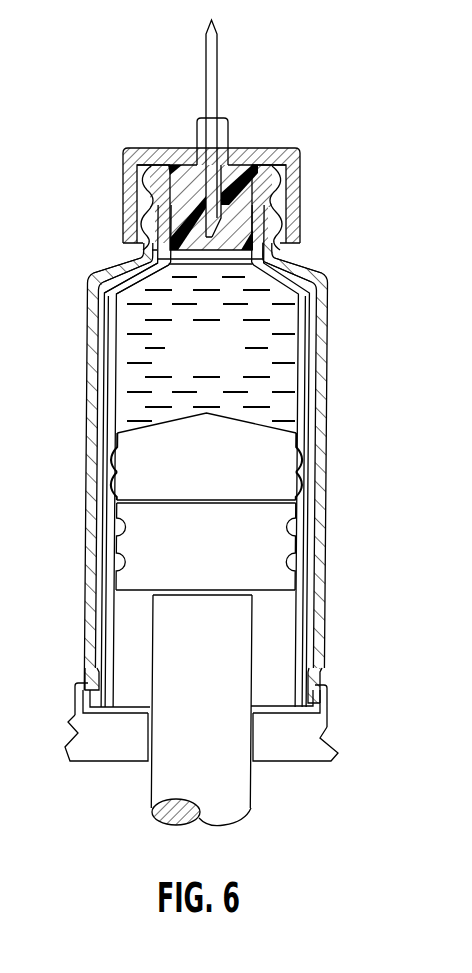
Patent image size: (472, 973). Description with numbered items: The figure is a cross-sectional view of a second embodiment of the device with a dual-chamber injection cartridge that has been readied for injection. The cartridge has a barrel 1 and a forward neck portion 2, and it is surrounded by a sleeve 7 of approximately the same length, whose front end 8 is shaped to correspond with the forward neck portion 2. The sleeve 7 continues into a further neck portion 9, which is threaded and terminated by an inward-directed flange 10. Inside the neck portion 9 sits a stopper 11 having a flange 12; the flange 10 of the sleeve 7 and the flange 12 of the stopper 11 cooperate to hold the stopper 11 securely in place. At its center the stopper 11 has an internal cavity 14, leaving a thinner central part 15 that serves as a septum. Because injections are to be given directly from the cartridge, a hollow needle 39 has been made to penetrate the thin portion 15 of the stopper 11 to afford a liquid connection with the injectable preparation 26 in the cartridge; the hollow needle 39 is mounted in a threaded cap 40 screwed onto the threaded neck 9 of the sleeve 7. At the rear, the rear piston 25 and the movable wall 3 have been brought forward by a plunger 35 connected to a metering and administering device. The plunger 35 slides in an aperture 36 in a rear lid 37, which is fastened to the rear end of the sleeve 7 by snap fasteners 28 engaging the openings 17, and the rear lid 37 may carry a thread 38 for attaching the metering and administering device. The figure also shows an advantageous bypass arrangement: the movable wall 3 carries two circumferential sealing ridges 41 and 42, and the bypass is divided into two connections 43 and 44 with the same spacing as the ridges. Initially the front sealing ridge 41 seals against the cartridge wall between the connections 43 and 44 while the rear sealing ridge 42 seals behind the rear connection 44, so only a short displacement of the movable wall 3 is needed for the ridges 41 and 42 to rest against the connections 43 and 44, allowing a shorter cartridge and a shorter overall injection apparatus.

The barrel 1 is at (115, 347).
The forward neck portion 2 is at (143, 258).
The movable wall 3 is at (211, 469).
The sleeve 7 is at (328, 350).
The front end 8 is at (303, 268).
The neck portion 9 is at (142, 193).
The inward-directed flange 10 is at (147, 148).
The stopper 11 is at (233, 213).
The flange 12 is at (262, 200).
The internal cavity 14 is at (200, 167).
The thinner central part 15 is at (193, 170).
The means for attaching actuating means 17 is at (86, 684).
The rear piston 25 is at (222, 562).
The injectable preparation 26 is at (229, 361).
The snap fasteners 28 is at (80, 679).
The plunger 35 is at (221, 707).
The aperture 36 is at (152, 766).
The rear lid 37 is at (108, 747).
The thread 38 is at (328, 735).
The hollow needle 39 is at (217, 86).
The threaded cap 40 is at (163, 148).
The front sealing ridge 41 is at (122, 441).
The rear sealing ridge 42 is at (120, 497).
The bypass connection 43 is at (298, 445).
The bypass connection 44 is at (298, 497).